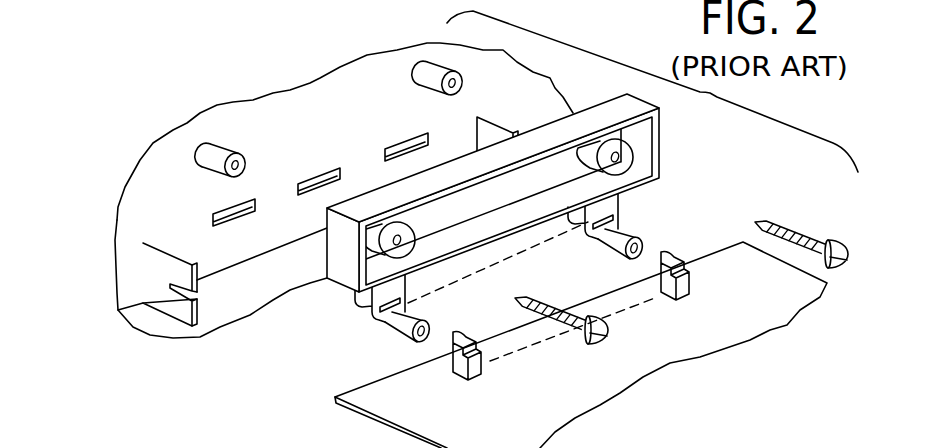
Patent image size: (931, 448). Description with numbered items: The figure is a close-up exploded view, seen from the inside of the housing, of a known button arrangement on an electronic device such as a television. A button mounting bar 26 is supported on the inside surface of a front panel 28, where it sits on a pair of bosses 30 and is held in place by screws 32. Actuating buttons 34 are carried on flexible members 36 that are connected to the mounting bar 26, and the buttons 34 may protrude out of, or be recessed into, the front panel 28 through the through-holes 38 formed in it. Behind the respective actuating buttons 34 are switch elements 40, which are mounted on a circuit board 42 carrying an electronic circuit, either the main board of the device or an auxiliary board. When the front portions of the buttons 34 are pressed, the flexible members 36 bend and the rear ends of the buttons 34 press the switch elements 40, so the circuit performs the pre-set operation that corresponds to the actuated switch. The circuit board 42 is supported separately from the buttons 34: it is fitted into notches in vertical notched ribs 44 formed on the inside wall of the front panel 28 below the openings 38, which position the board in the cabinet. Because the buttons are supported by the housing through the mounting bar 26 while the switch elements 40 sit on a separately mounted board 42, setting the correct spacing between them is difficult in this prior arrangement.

The button mounting bar 26 is at (660, 133).
The front panel 28 is at (132, 223).
The bosses 30 is at (426, 63).
The screws 32 is at (553, 311).
The actuating buttons 34 is at (400, 324).
The flexible members 36 is at (378, 297).
The through-holes 38 is at (313, 167).
The switch elements 40 is at (467, 372).
The circuit board 42 is at (392, 407).
The notched ribs 44 is at (168, 307).